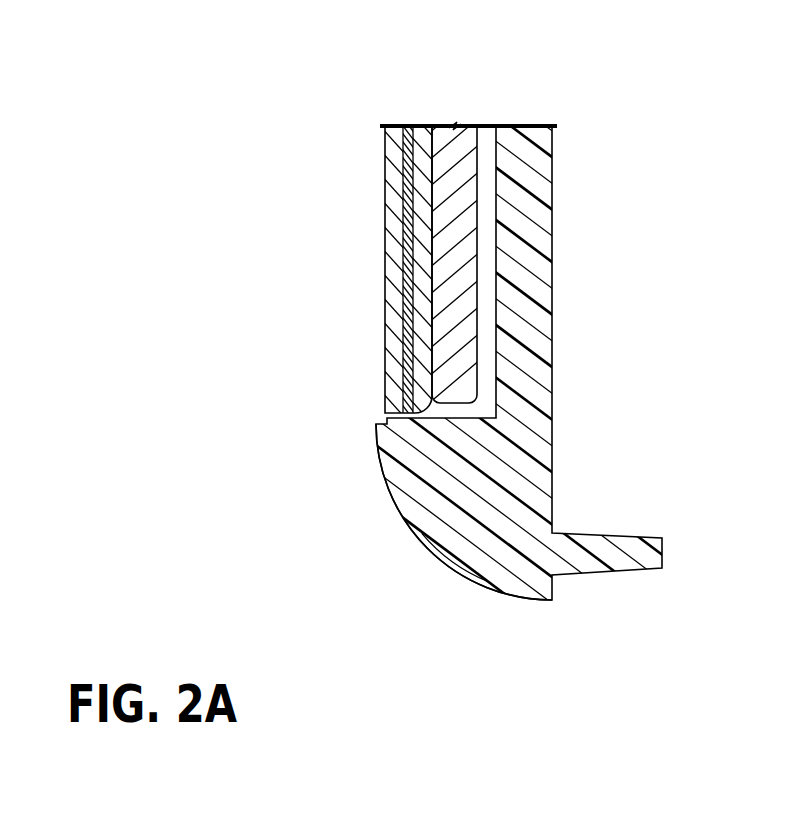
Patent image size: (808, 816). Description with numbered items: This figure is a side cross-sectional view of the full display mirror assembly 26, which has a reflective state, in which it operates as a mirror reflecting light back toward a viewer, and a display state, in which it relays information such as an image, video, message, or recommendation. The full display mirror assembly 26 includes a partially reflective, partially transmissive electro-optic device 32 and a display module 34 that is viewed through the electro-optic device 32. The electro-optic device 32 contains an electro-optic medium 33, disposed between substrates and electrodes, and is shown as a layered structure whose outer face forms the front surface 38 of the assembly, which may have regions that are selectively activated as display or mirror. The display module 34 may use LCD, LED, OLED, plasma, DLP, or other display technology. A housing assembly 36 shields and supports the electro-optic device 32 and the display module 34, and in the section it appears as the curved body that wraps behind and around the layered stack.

The full display mirror assembly 26 is at (654, 166).
The electro-optic device 32 is at (389, 118).
The electro-optic medium 33 is at (404, 120).
The display module 34 is at (465, 150).
The housing assembly 36 is at (393, 507).
The front surface 38 is at (378, 242).